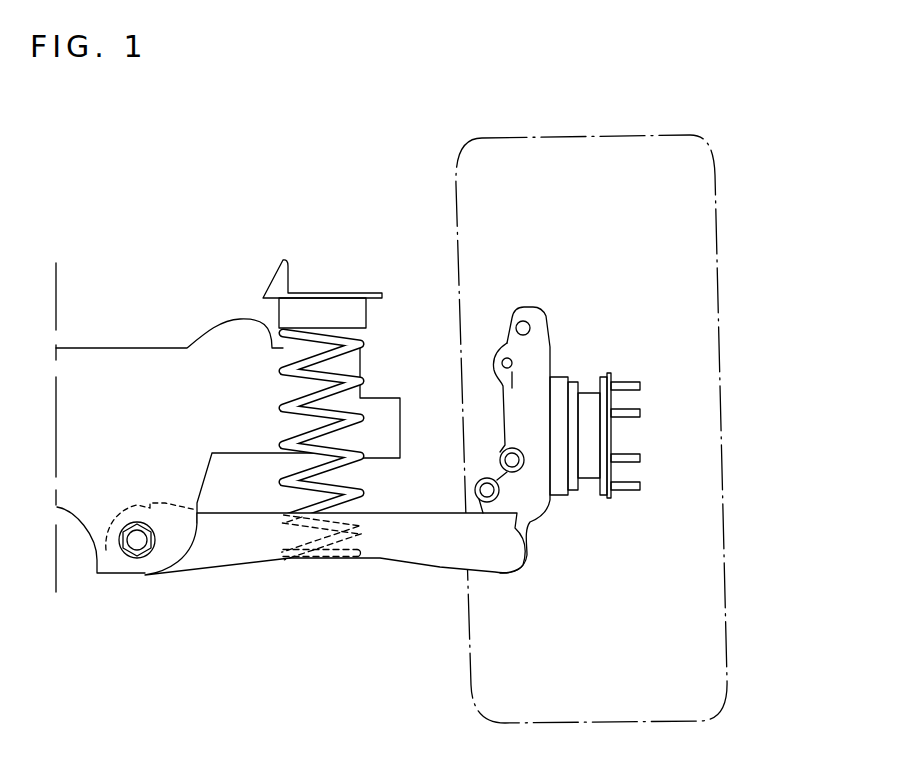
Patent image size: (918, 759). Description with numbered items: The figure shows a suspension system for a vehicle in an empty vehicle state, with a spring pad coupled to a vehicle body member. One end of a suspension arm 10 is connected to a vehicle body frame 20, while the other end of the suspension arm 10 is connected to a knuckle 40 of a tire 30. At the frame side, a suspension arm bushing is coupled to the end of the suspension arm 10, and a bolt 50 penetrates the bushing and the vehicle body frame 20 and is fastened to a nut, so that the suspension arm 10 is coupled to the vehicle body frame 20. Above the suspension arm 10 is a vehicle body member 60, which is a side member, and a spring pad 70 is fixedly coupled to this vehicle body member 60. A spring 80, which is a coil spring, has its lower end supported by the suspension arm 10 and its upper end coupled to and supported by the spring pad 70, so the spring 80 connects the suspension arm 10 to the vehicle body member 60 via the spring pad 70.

The suspension arm 10 is at (237, 555).
The vehicle body frame 20 is at (133, 365).
The tire 30 is at (715, 262).
The knuckle 40 is at (537, 433).
The bolt 50 is at (137, 543).
The vehicle body member 60 is at (340, 297).
The spring pad 70 is at (288, 308).
The spring 80 is at (362, 381).